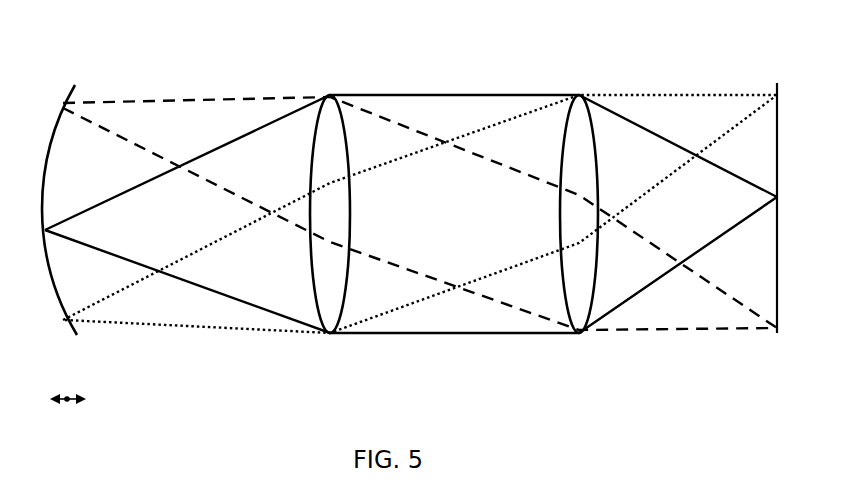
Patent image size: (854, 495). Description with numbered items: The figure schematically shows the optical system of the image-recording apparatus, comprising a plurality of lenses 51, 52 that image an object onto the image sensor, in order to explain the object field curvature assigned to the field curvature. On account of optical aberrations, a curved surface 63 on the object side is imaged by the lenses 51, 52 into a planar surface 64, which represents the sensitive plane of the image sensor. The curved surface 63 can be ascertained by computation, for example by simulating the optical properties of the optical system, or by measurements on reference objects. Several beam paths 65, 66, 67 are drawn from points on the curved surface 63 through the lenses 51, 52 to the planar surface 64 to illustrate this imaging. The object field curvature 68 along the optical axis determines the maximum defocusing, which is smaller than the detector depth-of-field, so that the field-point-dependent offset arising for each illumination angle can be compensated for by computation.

The lens 51 is at (329, 338).
The lens 52 is at (578, 338).
The curved surface 63 is at (62, 310).
The planar surface 64 is at (780, 309).
The solid ray bundle 65 is at (148, 177).
The dashed ray bundle 66 is at (180, 99).
The dotted ray bundle 67 is at (195, 245).
The object field curvature 68 is at (63, 404).